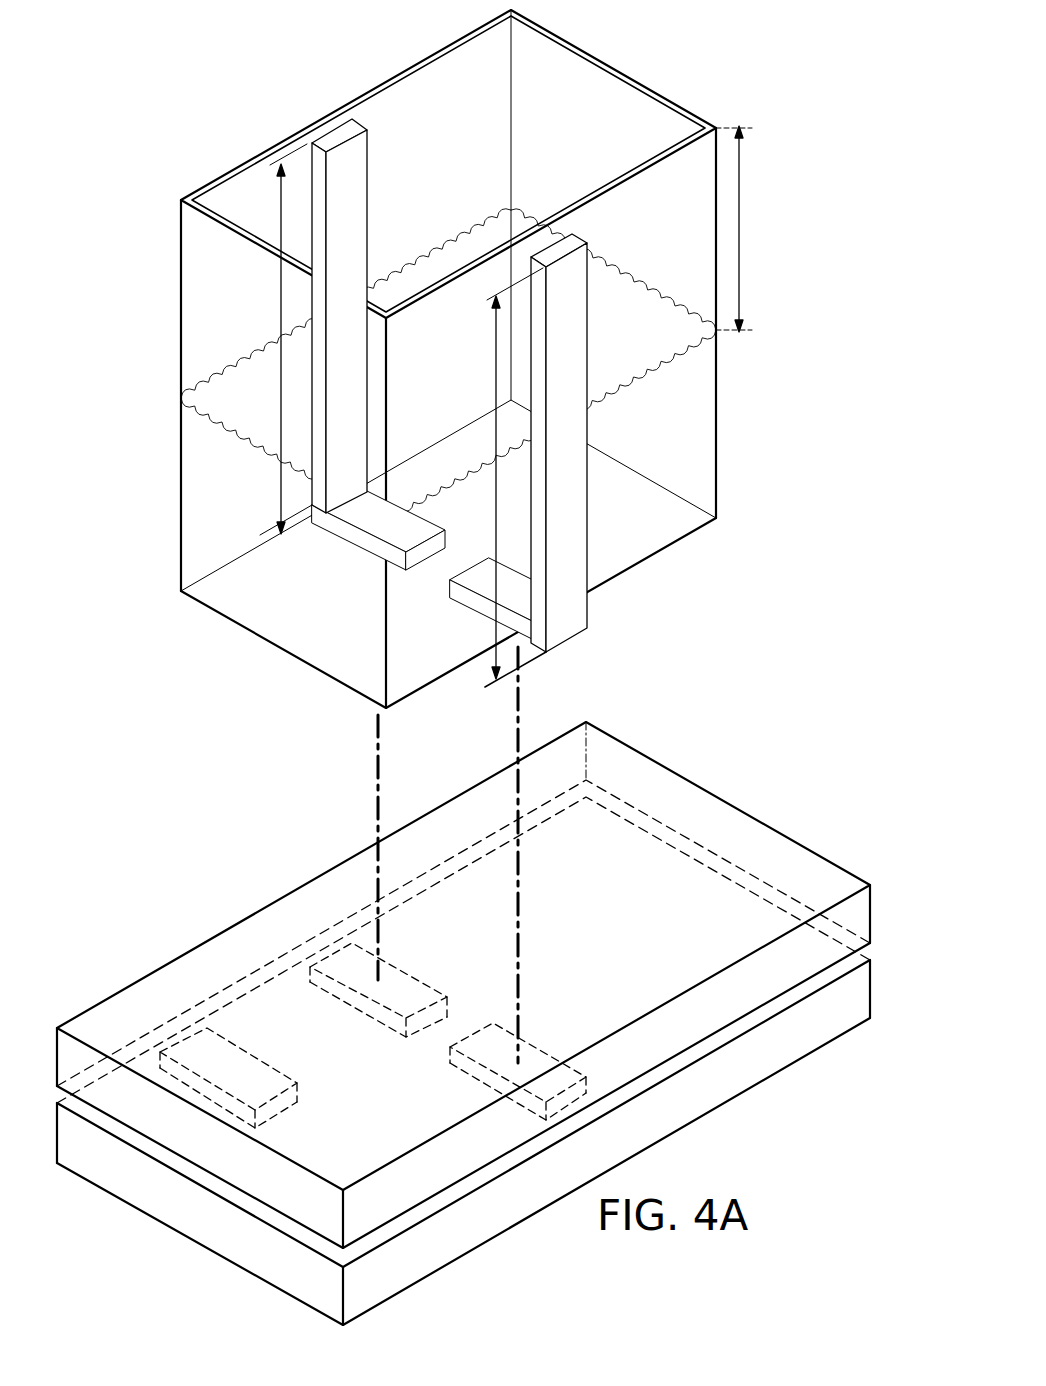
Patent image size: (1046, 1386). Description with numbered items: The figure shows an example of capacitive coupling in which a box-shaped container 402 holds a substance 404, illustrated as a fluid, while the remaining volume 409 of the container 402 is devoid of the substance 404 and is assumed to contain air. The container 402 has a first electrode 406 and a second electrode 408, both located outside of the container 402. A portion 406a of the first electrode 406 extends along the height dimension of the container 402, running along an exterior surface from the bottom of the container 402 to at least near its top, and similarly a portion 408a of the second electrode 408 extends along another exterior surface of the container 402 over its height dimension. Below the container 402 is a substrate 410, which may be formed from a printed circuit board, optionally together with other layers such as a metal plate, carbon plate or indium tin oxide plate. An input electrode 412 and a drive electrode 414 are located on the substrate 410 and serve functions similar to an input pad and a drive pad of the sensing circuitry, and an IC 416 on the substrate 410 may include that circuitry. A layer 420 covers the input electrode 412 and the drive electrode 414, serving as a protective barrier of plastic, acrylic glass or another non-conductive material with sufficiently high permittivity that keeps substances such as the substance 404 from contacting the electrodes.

The container 402 is at (642, 56).
The substance 404 is at (636, 292).
The first electrode 406 is at (367, 178).
The portion of first electrode 406a is at (281, 300).
The second electrode 408 is at (588, 347).
The portion of second electrode 408a is at (496, 358).
The volume 409 is at (744, 222).
The substrate 410 is at (187, 1225).
The input electrode 412 is at (532, 1050).
The drive electrode 414 is at (415, 978).
The IC 416 is at (300, 1097).
The layer 420 is at (725, 812).